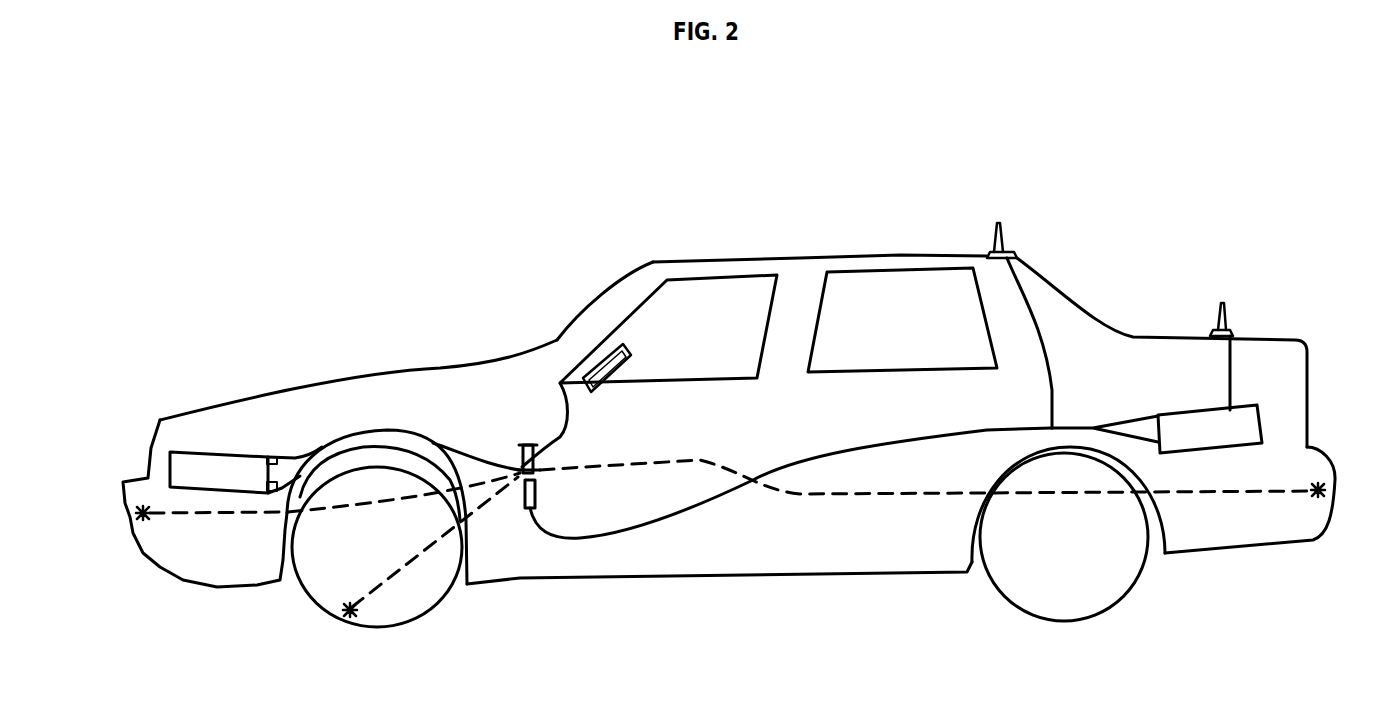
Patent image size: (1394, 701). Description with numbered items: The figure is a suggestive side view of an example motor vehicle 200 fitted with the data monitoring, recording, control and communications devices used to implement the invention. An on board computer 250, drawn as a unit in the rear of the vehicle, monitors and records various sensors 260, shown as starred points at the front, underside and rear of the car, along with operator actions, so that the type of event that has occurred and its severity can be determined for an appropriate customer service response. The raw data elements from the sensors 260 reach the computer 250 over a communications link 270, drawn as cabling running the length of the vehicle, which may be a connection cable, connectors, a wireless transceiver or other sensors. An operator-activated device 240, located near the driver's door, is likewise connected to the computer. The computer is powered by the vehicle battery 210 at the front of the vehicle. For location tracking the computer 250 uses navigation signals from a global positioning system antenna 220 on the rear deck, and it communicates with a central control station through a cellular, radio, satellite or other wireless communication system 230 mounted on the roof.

The vehicle 200 is at (355, 368).
The vehicle battery 210 is at (188, 455).
The global positioning system (GPS) antenna 220 is at (1225, 312).
The wireless communication system 230 is at (998, 222).
The operator-activated device 240 is at (620, 354).
The on board computer 250 is at (1250, 430).
The sensors 260 is at (139, 519).
The communications link 270 is at (393, 567).